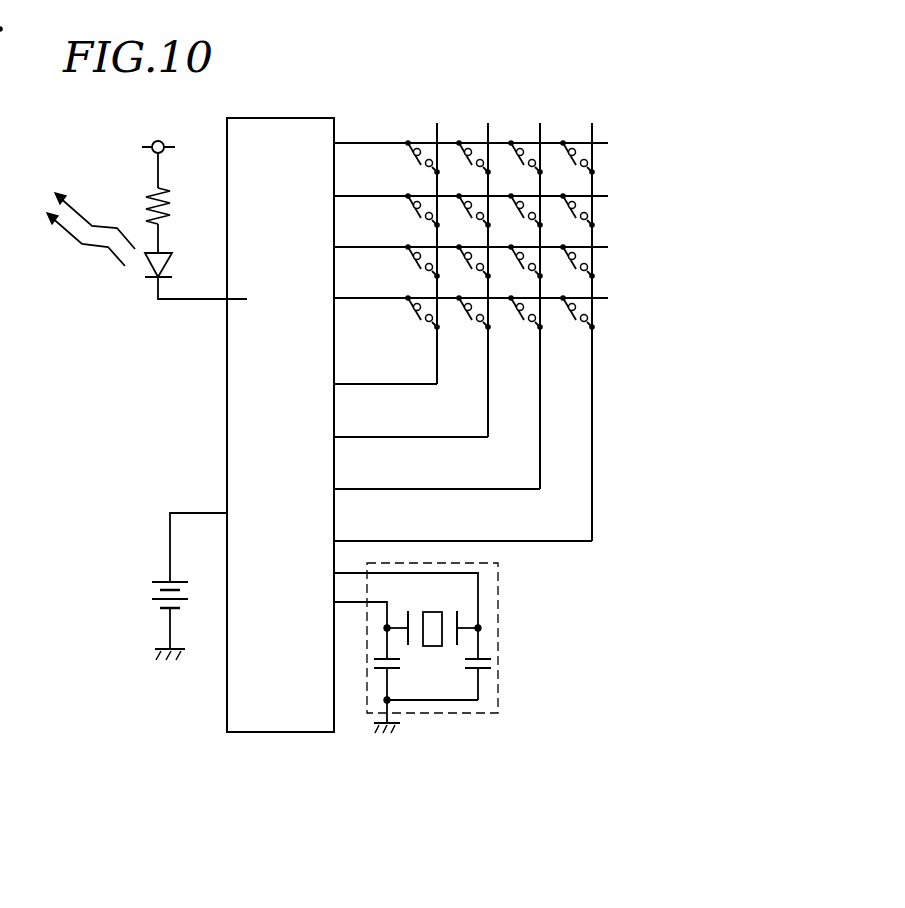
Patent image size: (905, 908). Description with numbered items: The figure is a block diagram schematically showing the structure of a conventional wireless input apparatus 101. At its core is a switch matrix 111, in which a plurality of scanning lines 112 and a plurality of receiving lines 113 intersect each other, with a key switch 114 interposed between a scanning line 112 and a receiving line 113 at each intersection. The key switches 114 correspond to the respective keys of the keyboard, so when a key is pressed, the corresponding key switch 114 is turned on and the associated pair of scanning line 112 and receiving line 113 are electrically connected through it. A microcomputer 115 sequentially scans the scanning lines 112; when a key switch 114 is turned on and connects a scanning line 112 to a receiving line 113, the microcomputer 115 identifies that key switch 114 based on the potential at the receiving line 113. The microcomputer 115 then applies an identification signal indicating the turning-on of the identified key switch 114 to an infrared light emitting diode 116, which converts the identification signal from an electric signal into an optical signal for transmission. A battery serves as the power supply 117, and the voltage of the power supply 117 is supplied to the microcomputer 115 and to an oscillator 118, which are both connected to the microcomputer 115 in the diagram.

The wireless input apparatus 101 is at (667, 741).
The switch matrix 111 is at (580, 75).
The scanning lines 112 is at (606, 298).
The receiving lines 113 is at (488, 123).
The key switch 114 is at (576, 322).
The microcomputer 115 is at (313, 130).
The infrared light emitting diode 116 is at (145, 275).
The power supply 117 is at (152, 598).
The oscillator 118 is at (500, 582).